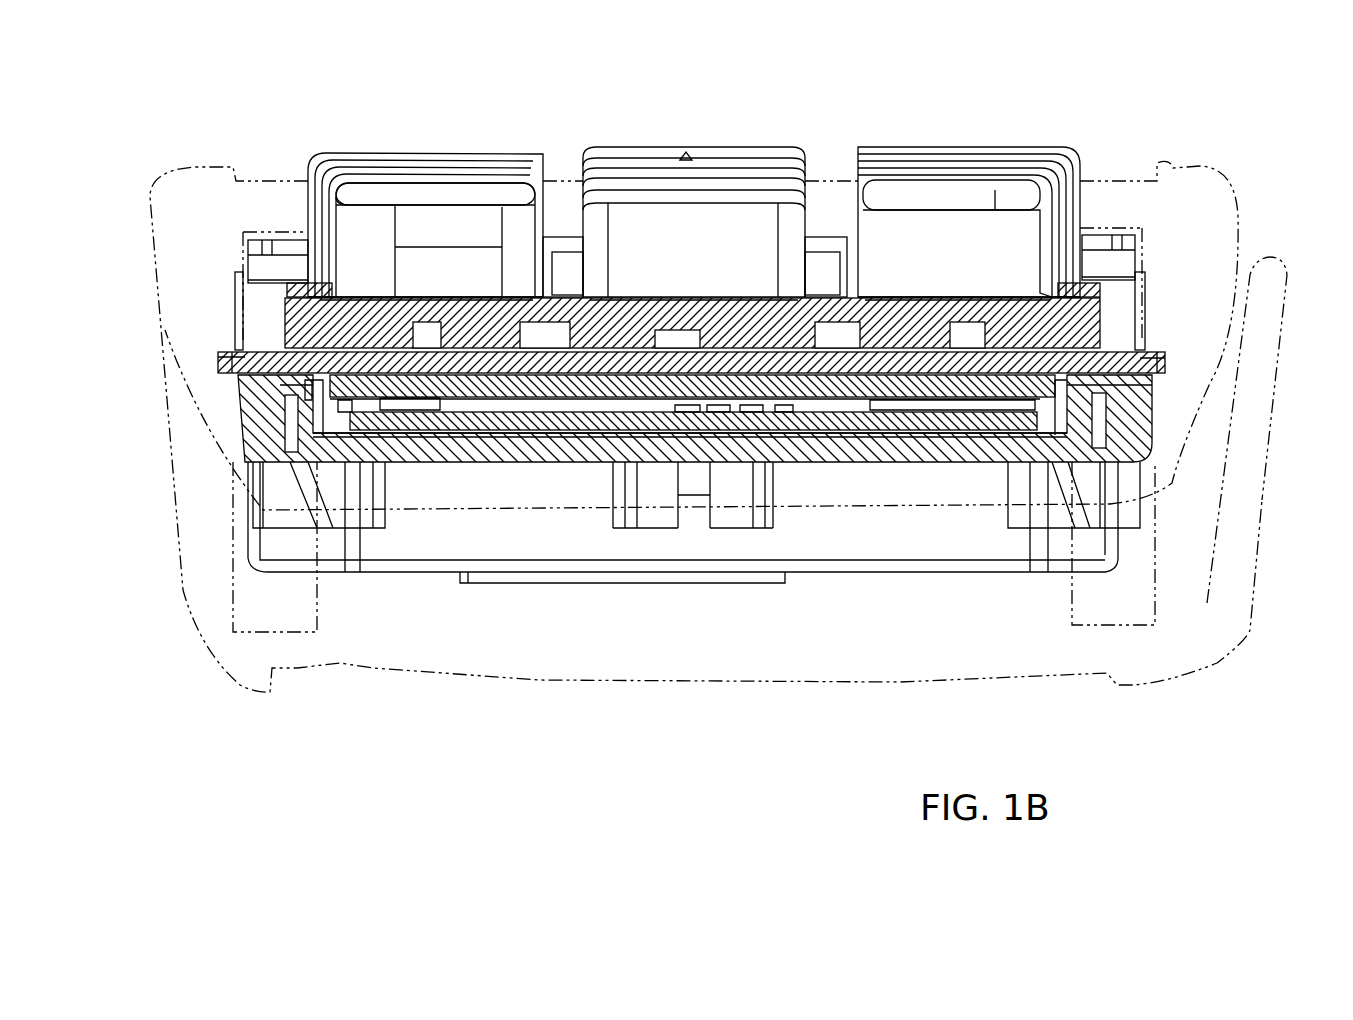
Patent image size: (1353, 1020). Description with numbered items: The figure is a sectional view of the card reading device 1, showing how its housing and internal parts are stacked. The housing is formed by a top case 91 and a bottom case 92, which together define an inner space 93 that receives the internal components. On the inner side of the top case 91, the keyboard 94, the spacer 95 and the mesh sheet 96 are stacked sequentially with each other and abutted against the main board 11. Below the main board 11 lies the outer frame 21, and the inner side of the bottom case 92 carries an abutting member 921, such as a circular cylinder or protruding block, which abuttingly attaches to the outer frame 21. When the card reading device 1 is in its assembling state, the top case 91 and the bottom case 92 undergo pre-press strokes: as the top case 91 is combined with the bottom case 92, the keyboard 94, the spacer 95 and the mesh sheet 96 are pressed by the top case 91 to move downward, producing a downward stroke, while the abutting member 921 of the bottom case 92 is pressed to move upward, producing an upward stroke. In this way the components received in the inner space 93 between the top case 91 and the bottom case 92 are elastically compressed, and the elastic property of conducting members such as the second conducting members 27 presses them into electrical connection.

The card reading device 1 is at (718, 44).
The main board 11 is at (250, 392).
The outer frame 21 is at (262, 462).
The second conducting member 27 is at (262, 392).
The top case 91 is at (176, 266).
The bottom case 92 is at (1230, 628).
The abutting member 921 is at (237, 582).
The inner space 93 is at (428, 592).
The keyboard 94 is at (436, 195).
The spacer 95 is at (345, 333).
The mesh sheet 96 is at (292, 348).